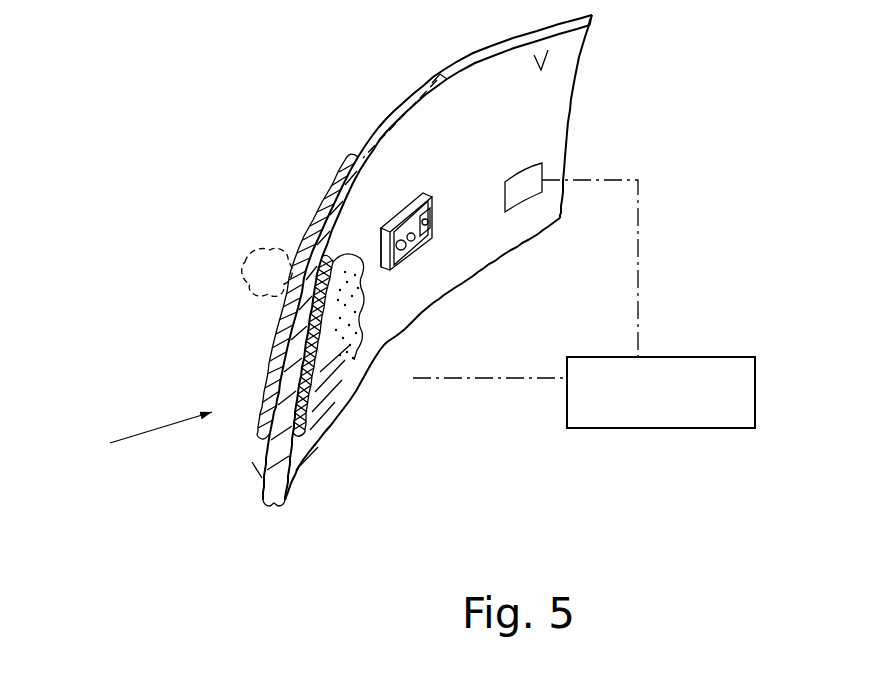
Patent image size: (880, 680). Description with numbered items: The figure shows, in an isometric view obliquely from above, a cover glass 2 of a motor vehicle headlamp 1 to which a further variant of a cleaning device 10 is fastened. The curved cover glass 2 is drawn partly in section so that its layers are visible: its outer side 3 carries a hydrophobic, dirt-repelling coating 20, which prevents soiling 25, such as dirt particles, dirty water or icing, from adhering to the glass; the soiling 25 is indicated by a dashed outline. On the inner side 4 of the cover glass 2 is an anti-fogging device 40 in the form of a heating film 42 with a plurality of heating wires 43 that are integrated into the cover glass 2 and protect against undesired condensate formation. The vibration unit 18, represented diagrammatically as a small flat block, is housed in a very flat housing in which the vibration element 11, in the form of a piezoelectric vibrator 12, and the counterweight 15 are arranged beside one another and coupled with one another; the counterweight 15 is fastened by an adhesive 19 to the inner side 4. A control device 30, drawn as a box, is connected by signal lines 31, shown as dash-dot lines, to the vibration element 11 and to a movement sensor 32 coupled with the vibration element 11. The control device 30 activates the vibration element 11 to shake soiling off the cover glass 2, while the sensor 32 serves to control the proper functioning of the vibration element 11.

The vehicle headlamp 1 is at (152, 435).
The cover glass 2 is at (522, 100).
The outer side of cover glass 3 is at (262, 478).
The inner side of cover glass 4 is at (548, 50).
The cleaning device 10 is at (387, 197).
The vibration element 11 is at (373, 231).
The piezoelectric vibrator 12 is at (413, 378).
The counterweight 15 is at (440, 230).
The vibration unit 18 is at (429, 246).
The adhesive 19 is at (379, 211).
The hydrophobic coating 20 is at (271, 355).
The soiling 25 is at (262, 272).
The control device 30 is at (677, 407).
The signal line 31 is at (642, 250).
The sensor 32 is at (518, 183).
The anti-fogging device 40 is at (301, 428).
The heating film 42 is at (312, 368).
The heating wire 43 is at (339, 350).